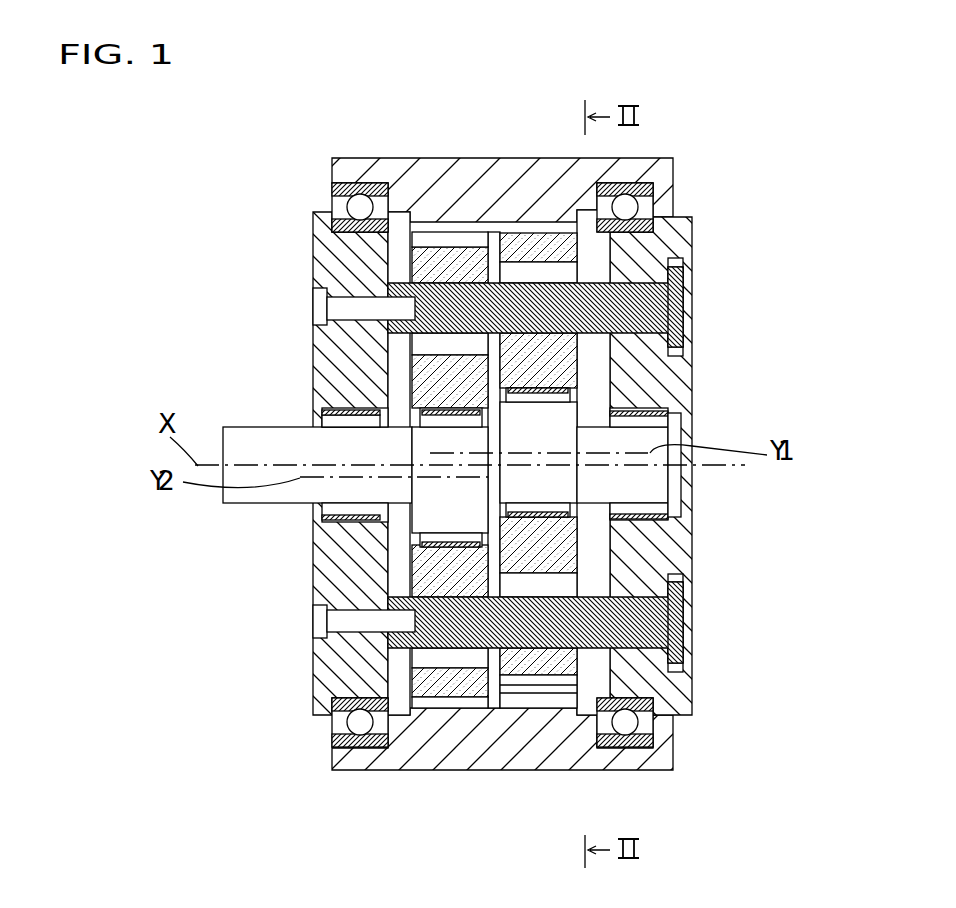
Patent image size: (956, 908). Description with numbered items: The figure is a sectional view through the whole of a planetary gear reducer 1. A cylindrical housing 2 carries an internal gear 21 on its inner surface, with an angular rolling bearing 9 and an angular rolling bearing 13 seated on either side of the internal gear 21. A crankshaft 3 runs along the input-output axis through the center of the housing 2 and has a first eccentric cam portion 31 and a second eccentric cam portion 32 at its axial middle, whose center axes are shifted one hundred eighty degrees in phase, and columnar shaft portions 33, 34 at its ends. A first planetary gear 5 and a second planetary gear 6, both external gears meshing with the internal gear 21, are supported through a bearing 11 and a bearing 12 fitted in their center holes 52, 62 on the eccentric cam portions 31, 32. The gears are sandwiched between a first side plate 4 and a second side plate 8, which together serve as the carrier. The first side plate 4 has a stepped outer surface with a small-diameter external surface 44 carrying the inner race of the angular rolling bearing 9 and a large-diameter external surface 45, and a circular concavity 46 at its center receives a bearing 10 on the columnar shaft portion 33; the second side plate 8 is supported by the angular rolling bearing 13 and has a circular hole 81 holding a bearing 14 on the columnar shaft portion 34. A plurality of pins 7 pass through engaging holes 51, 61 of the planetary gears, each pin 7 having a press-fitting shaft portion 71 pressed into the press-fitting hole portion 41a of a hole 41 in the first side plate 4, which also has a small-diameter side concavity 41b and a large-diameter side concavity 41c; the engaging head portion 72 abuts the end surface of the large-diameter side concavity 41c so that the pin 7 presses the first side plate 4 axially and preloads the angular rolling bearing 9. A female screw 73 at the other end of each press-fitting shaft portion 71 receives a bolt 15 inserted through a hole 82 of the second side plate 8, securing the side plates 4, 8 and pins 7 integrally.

The planetary gear reducer 1 is at (723, 173).
The housing 2 is at (657, 158).
The crankshaft 3 is at (240, 503).
The first side plate 4 is at (693, 698).
The first planetary gear 5 is at (562, 242).
The second planetary gear 6 is at (449, 262).
The pin 7 is at (685, 283).
The second side plate 8 is at (313, 663).
The angular rolling bearing 9 is at (625, 735).
The bearing 10 is at (670, 398).
The bearing 11 is at (610, 358).
The bearing 12 is at (448, 352).
The angular rolling bearing 13 is at (358, 735).
The bearing 14 is at (353, 408).
The bolt 15 is at (320, 305).
The internal gear 21 is at (482, 240).
The first eccentric cam portion 31 is at (590, 400).
The second eccentric cam portion 32 is at (450, 408).
The columnar shaft portion 33 is at (660, 408).
The columnar shaft portion 34 is at (320, 410).
The hole 41 is at (776, 578).
The press-fitting hole portion 41a is at (676, 627).
The small-diameter side concavity 41b is at (660, 606).
The large-diameter side concavity 41c is at (686, 658).
The external surface 44 is at (660, 770).
The external surface 45 is at (678, 716).
The circular concavity 46 is at (640, 498).
The engaging hole 51 is at (535, 272).
The center hole 52 is at (605, 522).
The engaging hole 61 is at (400, 345).
The center hole 62 is at (430, 515).
The press-fitting shaft portion 71 is at (588, 293).
The engaging head portion 72 is at (676, 308).
The female screw 73 is at (345, 268).
The circular hole 81 is at (345, 505).
The hole 82 is at (318, 617).